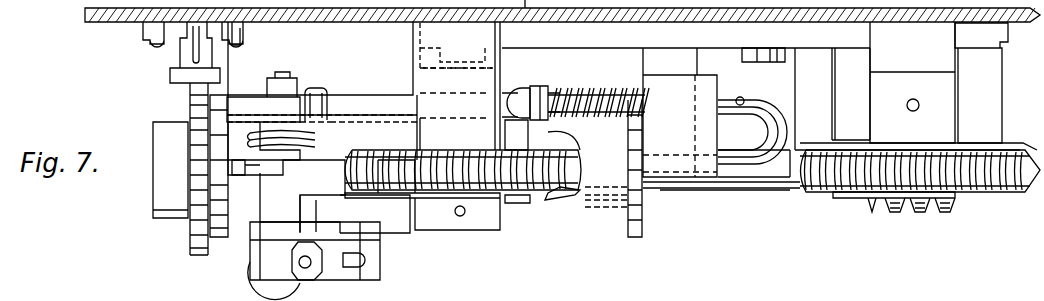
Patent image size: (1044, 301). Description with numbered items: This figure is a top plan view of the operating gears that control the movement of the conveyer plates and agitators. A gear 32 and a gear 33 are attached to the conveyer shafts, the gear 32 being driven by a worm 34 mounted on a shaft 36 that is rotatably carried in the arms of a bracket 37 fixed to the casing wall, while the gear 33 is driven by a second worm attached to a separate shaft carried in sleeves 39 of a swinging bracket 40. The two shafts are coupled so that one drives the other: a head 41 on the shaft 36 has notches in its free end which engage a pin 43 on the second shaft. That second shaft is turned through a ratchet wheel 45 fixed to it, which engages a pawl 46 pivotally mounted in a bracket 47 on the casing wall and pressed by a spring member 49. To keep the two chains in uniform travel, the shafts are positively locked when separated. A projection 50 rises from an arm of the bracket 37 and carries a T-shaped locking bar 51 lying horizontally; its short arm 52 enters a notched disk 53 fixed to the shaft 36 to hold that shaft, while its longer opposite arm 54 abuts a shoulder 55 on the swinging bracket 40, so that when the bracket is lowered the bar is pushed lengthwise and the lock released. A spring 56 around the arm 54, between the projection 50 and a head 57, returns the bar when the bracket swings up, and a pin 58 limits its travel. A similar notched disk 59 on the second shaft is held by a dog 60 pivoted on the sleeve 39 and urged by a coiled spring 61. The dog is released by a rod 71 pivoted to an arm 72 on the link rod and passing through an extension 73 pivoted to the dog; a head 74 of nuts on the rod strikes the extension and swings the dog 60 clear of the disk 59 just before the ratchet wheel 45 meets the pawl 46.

The gear 32 is at (863, 175).
The gear 33 is at (447, 158).
The worm 34 is at (913, 210).
The shaft 36 is at (778, 172).
The bracket 37 is at (820, 106).
The sleeves 39 is at (330, 138).
The swinging bracket 40 is at (358, 105).
The head 41 is at (611, 190).
The pin 43 is at (567, 203).
The ratchet wheel 45 is at (192, 103).
The pawl 46 is at (172, 78).
The bracket 47 is at (177, 50).
The spring member 49 is at (194, 60).
The projection 50 is at (680, 112).
The locking bar 51 is at (733, 100).
The short arm 52 is at (701, 172).
The notched disk 53 is at (643, 208).
The opposite arm 54 is at (612, 93).
The shoulder 55 is at (528, 88).
The spring 56 is at (568, 95).
The head 57 is at (546, 86).
The pin 58 is at (748, 104).
The notched disk 59 is at (218, 238).
The dog 60 is at (258, 150).
The coiled spring 61 is at (258, 97).
The rod 71 is at (380, 265).
The arm 72 is at (375, 232).
The extension 73 is at (380, 252).
The head 74 is at (320, 232).